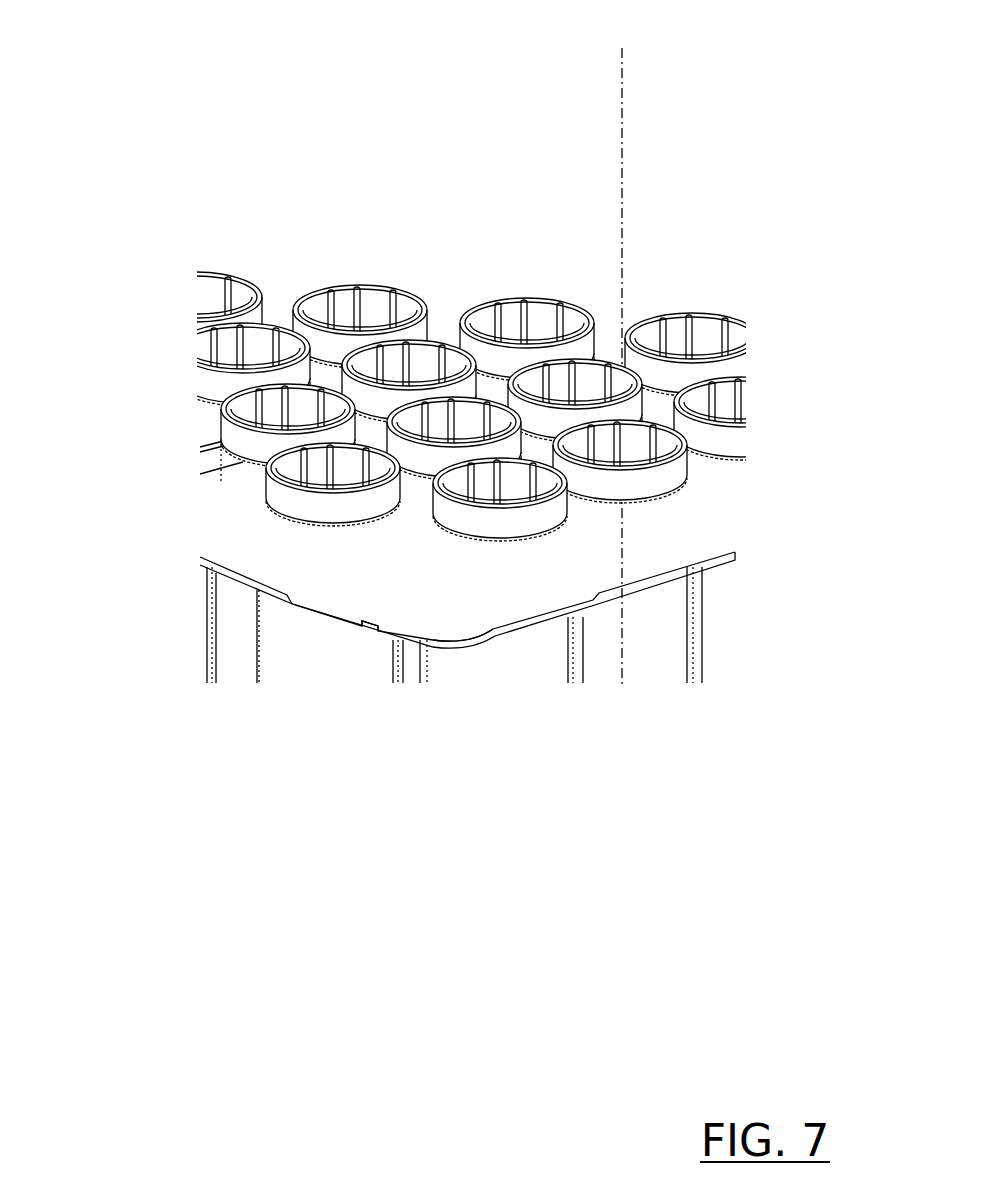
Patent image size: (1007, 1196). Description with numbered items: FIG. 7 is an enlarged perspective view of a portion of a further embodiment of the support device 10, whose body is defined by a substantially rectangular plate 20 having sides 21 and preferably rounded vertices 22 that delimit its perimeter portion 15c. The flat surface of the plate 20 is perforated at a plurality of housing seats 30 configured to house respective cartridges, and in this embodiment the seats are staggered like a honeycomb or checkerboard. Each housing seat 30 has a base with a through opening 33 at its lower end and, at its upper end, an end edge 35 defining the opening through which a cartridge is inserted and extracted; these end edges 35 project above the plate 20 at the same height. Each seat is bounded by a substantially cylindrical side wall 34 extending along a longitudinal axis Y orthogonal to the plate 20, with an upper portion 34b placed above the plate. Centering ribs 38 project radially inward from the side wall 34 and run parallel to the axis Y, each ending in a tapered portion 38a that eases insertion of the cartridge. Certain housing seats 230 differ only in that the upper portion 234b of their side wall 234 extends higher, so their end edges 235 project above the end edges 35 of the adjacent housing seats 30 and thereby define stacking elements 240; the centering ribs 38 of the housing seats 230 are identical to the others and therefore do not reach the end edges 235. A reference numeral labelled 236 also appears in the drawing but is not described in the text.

The support device 10 is at (312, 107).
The perimeter portion 15c is at (430, 599).
The plate 20 is at (458, 582).
The sides 21 is at (323, 600).
The vertices 22 is at (428, 637).
The housing seats 30 is at (476, 434).
The through opening 33 is at (317, 477).
The side wall 34 is at (262, 485).
The upper portion of the side wall 34b is at (277, 497).
The end edge 35 is at (297, 488).
The centering ribs 38 is at (697, 322).
The tapered portion 38a is at (668, 346).
The housing seats 230 is at (386, 444).
The side wall 234 is at (413, 492).
The upper portion of the side wall 234b is at (508, 447).
The end edges 235 is at (490, 397).
The slot 236 is at (463, 418).
The stacking elements 240 is at (400, 403).
The longitudinal axis Y is at (623, 79).